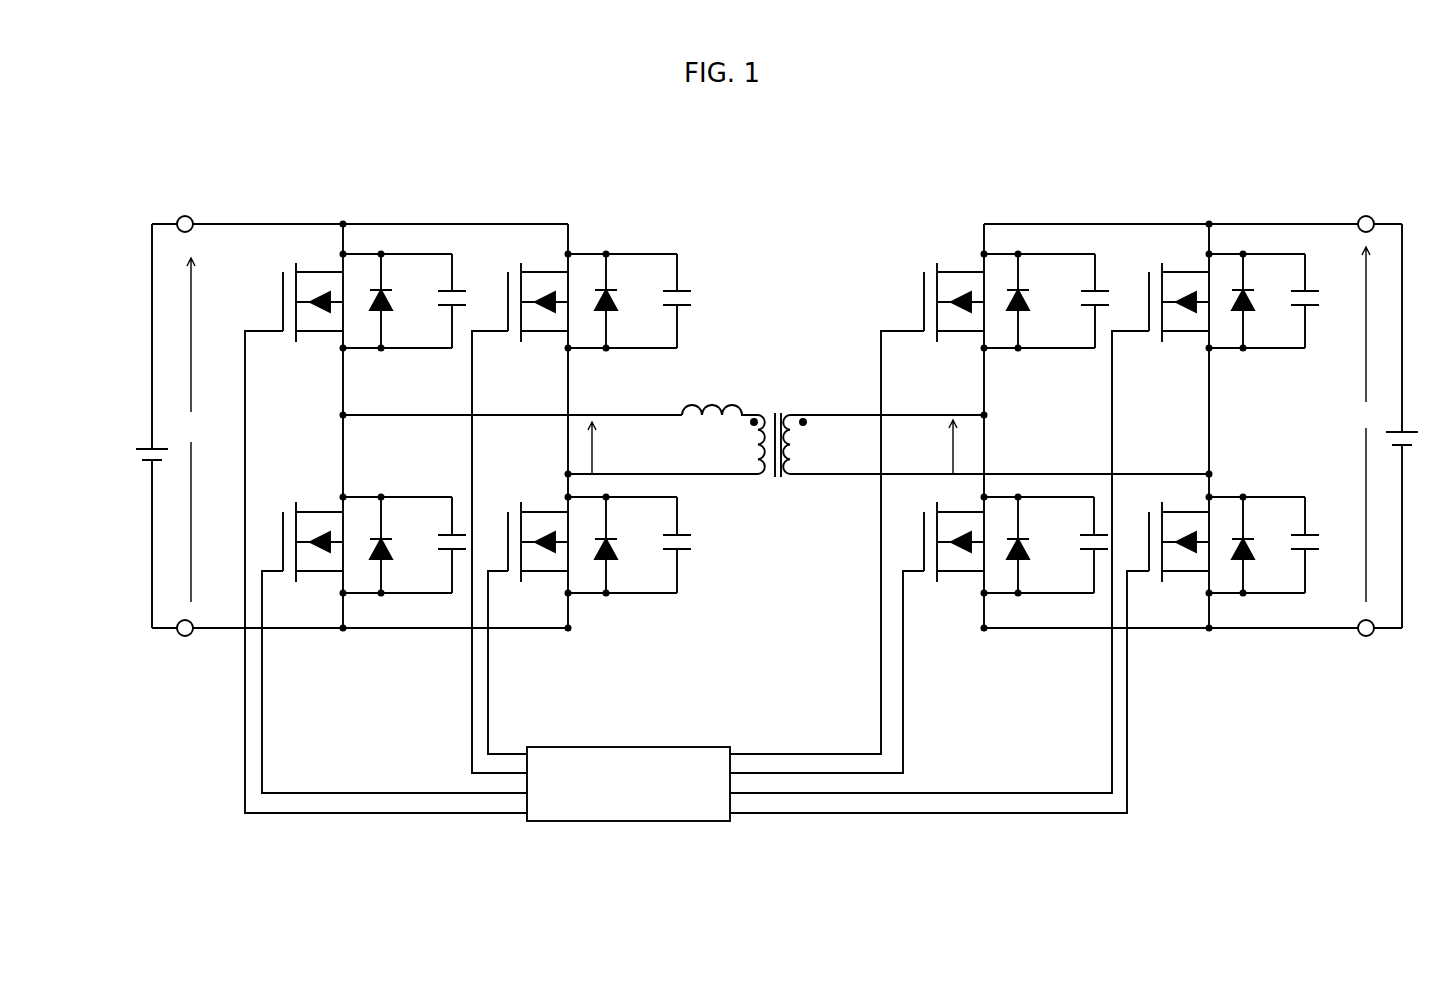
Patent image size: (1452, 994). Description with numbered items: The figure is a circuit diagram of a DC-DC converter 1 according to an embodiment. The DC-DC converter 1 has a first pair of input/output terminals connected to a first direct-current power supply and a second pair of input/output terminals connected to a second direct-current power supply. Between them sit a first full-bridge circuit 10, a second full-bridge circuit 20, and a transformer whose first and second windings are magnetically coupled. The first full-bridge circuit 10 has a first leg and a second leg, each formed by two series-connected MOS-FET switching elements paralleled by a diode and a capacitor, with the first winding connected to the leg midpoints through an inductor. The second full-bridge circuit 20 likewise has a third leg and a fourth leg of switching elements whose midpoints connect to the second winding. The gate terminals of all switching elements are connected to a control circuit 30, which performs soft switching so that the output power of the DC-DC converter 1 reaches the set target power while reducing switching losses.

The DC-DC converter 1 is at (190, 103).
The first full-bridge circuit 10 is at (380, 180).
The second full-bridge circuit 20 is at (1227, 180).
The control circuit 30 is at (720, 747).